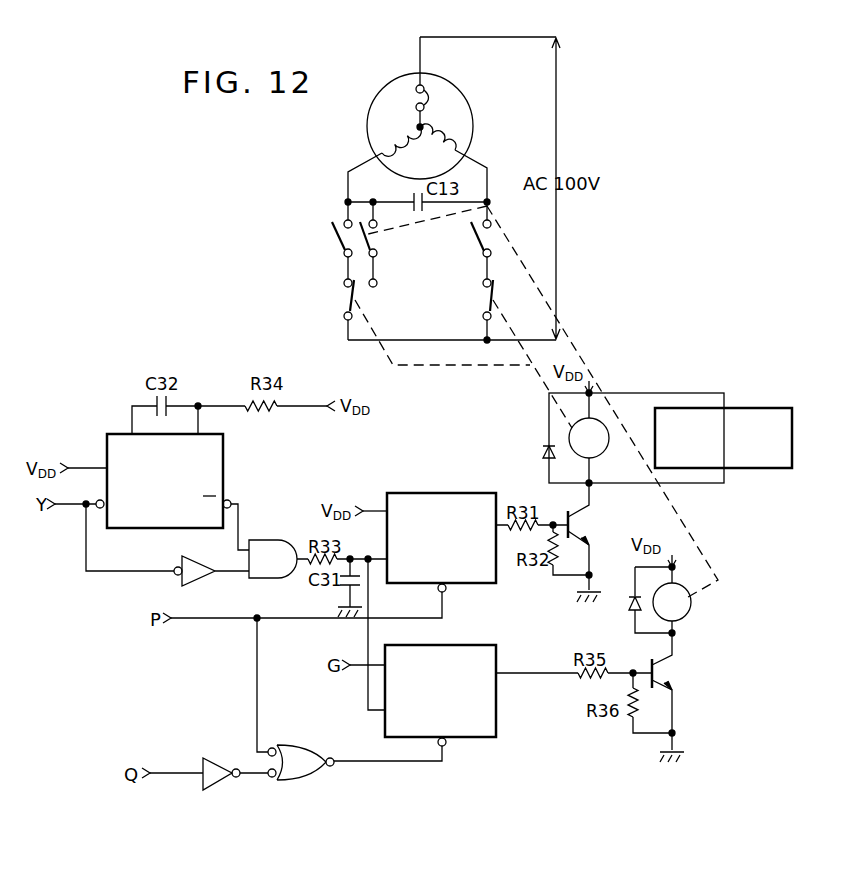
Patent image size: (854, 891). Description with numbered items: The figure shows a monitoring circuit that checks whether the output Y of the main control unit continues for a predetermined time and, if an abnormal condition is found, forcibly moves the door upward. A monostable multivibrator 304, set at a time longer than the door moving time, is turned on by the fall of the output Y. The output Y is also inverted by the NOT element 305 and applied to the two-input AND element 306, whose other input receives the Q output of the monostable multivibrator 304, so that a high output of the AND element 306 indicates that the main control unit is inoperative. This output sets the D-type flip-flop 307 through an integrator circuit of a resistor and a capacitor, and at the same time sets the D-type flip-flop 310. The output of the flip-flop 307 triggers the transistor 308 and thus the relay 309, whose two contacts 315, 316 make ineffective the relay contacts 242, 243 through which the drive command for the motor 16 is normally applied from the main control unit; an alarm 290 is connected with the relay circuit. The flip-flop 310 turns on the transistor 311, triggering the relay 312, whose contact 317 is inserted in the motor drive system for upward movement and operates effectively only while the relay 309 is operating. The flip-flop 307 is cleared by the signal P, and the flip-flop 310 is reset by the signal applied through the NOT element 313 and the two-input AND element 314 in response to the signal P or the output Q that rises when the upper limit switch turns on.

The motor 16 is at (496, 108).
The relay contact 242 is at (337, 243).
The relay contact 243 is at (490, 236).
The contact of the relay 312 317 is at (374, 237).
The contact of the relay 309 315 is at (344, 300).
The contact of the relay 309 316 is at (485, 299).
The alarm 290 is at (757, 409).
The relay 309 is at (608, 445).
The transistor 308 is at (578, 526).
The relay 312 is at (690, 606).
The transistor 311 is at (668, 671).
The monostable multivibrator 304 is at (223, 461).
The NOT element 305 is at (190, 587).
The 2-input AND element 306 is at (262, 578).
The D-type flip-flop 307 is at (462, 493).
The D-type flip-flop 310 is at (466, 645).
The NOT element 313 is at (214, 790).
The 2-input AND element 314 is at (306, 780).